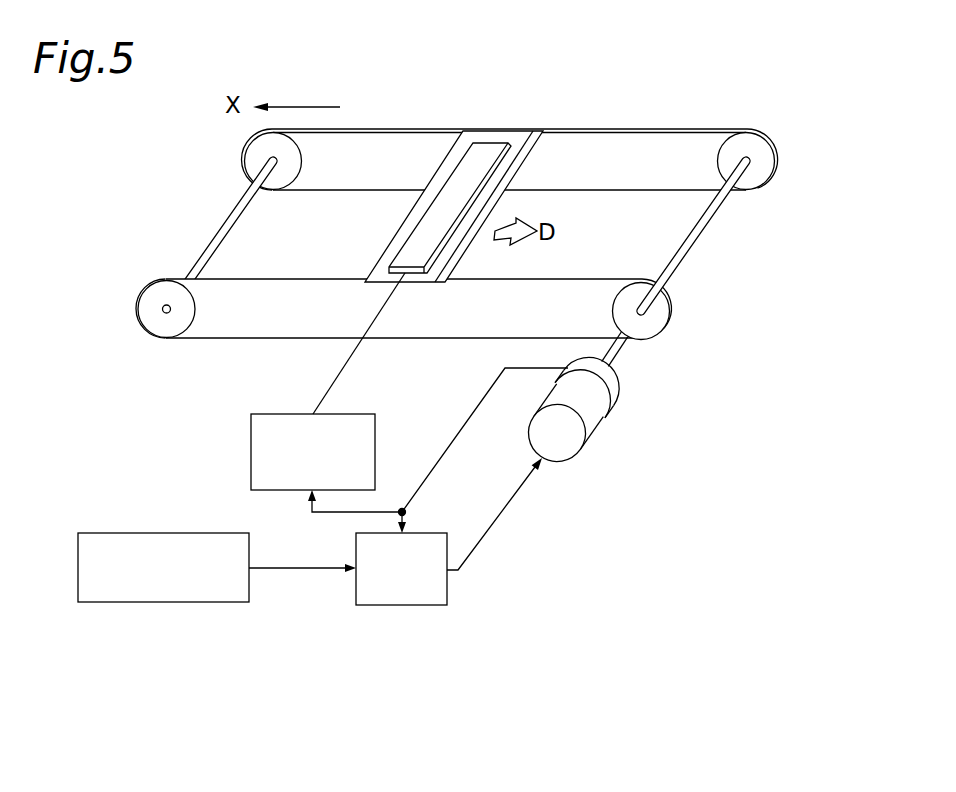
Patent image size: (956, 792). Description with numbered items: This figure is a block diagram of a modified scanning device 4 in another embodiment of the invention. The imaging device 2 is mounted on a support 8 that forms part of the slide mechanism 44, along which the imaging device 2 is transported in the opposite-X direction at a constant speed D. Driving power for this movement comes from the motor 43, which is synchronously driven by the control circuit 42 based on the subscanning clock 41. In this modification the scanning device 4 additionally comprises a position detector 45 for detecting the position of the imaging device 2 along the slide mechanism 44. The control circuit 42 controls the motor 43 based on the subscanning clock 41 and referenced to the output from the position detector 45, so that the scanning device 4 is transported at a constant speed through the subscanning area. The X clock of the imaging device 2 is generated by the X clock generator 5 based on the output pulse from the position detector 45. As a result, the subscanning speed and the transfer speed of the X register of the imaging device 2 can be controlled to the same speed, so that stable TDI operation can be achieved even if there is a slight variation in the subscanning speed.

The imaging device 2 is at (488, 153).
The scanning device 4 is at (648, 111).
The X clock generator 5 is at (275, 412).
The support 8 is at (520, 157).
The subscanning clock 41 is at (166, 532).
The control circuit 42 is at (400, 607).
The motor 43 is at (592, 417).
The slide mechanism 44 is at (761, 178).
The position detector 45 is at (613, 385).